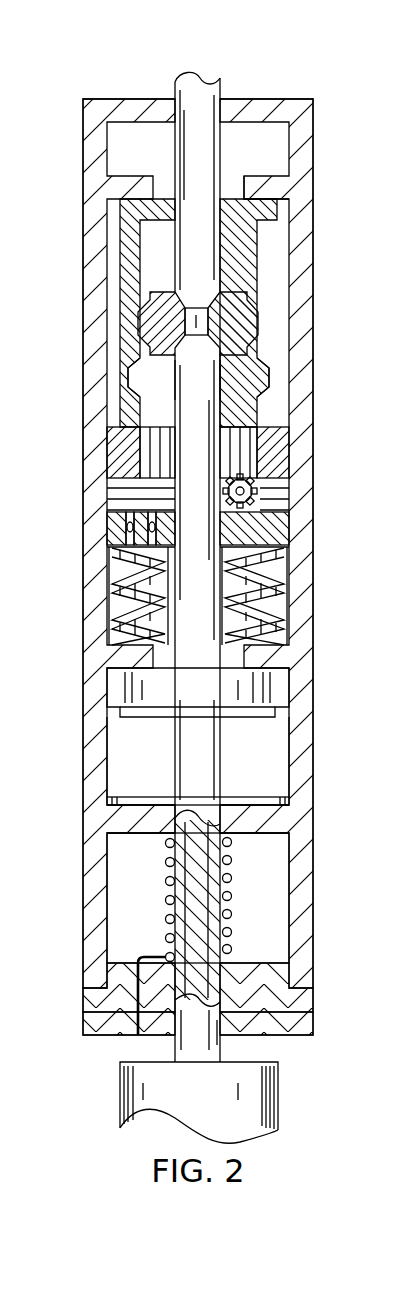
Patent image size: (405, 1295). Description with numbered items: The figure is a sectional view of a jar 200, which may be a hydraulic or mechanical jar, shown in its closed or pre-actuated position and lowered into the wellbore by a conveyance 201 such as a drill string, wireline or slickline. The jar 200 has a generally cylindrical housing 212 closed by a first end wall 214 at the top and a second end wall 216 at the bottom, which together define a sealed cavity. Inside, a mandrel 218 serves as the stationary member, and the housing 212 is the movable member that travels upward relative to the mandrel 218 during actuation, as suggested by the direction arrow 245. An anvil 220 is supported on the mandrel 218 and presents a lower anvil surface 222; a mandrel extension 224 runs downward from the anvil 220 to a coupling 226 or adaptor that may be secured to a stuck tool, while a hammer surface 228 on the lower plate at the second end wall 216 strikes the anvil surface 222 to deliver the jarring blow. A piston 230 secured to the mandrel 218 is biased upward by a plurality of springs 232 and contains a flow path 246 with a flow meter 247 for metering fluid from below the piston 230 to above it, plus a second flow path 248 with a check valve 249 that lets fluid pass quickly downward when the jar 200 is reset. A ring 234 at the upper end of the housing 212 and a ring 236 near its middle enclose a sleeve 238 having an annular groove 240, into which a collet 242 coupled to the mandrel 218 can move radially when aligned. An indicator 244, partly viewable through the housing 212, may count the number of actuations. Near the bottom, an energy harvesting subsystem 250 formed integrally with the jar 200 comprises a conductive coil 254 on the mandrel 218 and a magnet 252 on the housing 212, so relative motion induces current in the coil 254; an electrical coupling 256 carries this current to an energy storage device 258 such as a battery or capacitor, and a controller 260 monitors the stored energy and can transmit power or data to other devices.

The jar 200 is at (89, 71).
The conveyance 201 is at (177, 83).
The housing 212 is at (312, 716).
The first end wall 214 is at (120, 133).
The second end wall 216 is at (130, 805).
The mandrel 218 is at (180, 164).
The anvil 220 is at (117, 692).
The anvil surface 222 is at (250, 718).
The mandrel extension 224 is at (178, 742).
The coupling 226 is at (120, 1093).
The hammer surface 228 is at (135, 795).
The piston 230 is at (283, 533).
The springs 232 is at (283, 625).
The ring 234 is at (273, 177).
The ring 236 is at (287, 448).
The sleeve 238 is at (120, 285).
The annular groove 240 is at (140, 345).
The collet 242 is at (250, 310).
The indicator 244 is at (258, 491).
The direction of movement 245 is at (222, 377).
The flow path 246 is at (128, 518).
The flow meter 247 is at (128, 530).
The second flow path 248 is at (125, 553).
The check valve 249 is at (148, 530).
The energy harvesting subsystem 250 is at (320, 833).
The magnet 252 is at (170, 897).
The conductive coil 254 is at (166, 864).
The electrical coupling 256 is at (152, 956).
The energy storage device 258 is at (90, 1002).
The controller 260 is at (90, 1028).